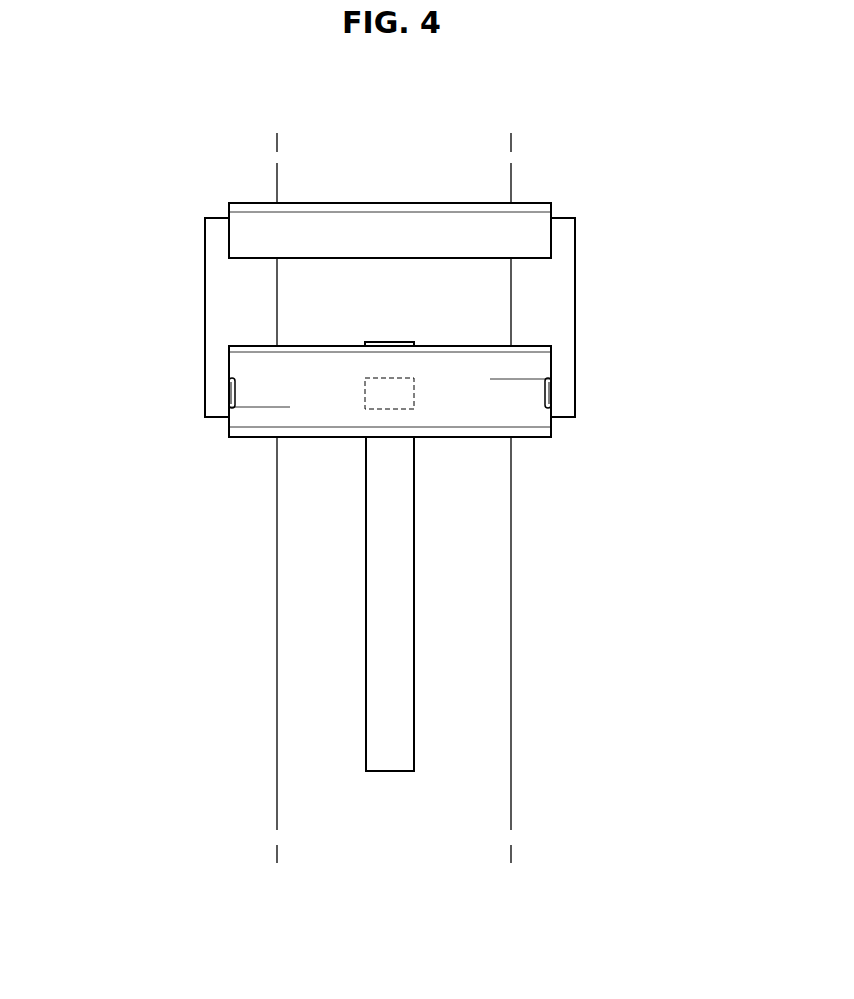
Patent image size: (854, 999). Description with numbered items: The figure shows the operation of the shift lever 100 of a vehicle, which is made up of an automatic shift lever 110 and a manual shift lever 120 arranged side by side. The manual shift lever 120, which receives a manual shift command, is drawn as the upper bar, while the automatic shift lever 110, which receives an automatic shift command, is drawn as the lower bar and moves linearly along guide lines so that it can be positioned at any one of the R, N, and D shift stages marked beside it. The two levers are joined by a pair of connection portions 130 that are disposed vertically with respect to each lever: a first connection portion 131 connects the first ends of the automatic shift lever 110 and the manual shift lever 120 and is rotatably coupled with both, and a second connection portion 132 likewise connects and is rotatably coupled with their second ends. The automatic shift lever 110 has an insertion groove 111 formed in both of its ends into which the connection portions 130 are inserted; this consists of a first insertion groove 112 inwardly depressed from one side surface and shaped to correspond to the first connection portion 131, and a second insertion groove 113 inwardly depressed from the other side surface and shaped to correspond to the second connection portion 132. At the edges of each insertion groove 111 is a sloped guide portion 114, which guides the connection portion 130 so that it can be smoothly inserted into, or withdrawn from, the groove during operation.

The shift lever 100 is at (165, 158).
The automatic shift lever 110 is at (240, 448).
The insertion groove 111 is at (390, 387).
The first insertion groove 112 is at (230, 390).
The second insertion groove 113 is at (547, 390).
The guide portion 114 is at (227, 405).
The manual shift lever 120 is at (240, 198).
The connection portion 130 is at (392, 317).
The first connection portion 131 is at (213, 303).
The second connection portion 132 is at (568, 303).